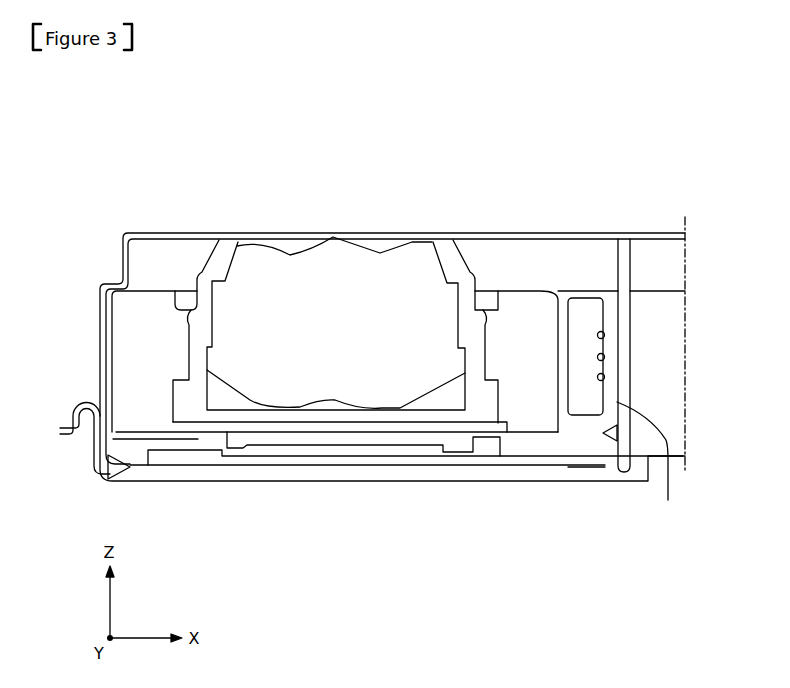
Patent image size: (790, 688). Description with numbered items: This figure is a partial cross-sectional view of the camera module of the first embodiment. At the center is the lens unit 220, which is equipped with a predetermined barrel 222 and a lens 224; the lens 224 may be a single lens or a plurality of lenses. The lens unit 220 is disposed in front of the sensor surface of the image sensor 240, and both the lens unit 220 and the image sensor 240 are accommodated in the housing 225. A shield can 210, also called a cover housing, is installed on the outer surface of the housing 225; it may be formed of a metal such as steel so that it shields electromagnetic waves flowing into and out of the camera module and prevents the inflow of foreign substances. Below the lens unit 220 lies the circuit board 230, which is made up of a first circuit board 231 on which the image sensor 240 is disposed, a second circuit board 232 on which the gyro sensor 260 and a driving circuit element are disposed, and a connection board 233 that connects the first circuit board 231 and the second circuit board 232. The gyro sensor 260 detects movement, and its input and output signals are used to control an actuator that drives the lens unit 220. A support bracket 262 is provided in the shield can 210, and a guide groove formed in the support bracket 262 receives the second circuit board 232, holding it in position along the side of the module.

The shield can 210 is at (579, 233).
The lens unit 220 is at (290, 134).
The barrel 222 is at (218, 246).
The lens 224 is at (270, 263).
The housing 225 is at (122, 342).
The circuit board 230 is at (683, 572).
The first circuit board 231 is at (541, 470).
The second circuit board 232 is at (668, 500).
The connection board 233 is at (604, 475).
The image sensor 240 is at (325, 455).
The gyro sensor 260 is at (593, 316).
The support bracket 262 is at (632, 363).